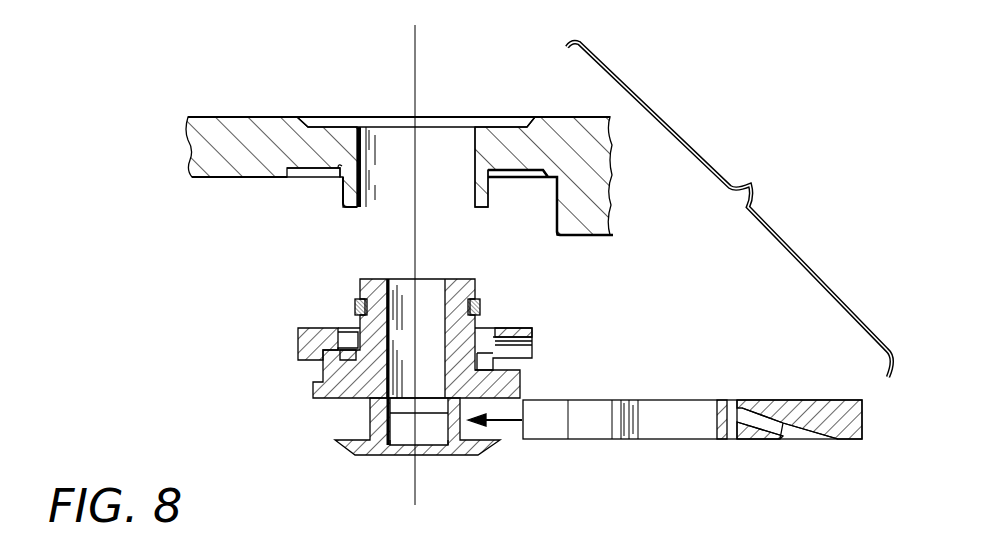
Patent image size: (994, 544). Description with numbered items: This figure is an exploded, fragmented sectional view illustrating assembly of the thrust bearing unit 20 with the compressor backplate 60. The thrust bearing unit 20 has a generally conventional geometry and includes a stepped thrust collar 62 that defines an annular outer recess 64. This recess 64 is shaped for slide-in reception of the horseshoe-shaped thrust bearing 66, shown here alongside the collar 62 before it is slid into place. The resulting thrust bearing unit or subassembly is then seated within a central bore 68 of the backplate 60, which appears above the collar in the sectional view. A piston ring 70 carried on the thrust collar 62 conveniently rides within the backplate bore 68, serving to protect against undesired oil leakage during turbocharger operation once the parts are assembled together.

The thrust bearing unit 20 is at (250, 360).
The compressor backplate 60 is at (220, 124).
The stepped thrust collar 62 is at (492, 380).
The annular outer recess 64 is at (360, 415).
The thrust bearing 66 is at (750, 432).
The central bore 68 is at (365, 157).
The piston ring 70 is at (480, 305).